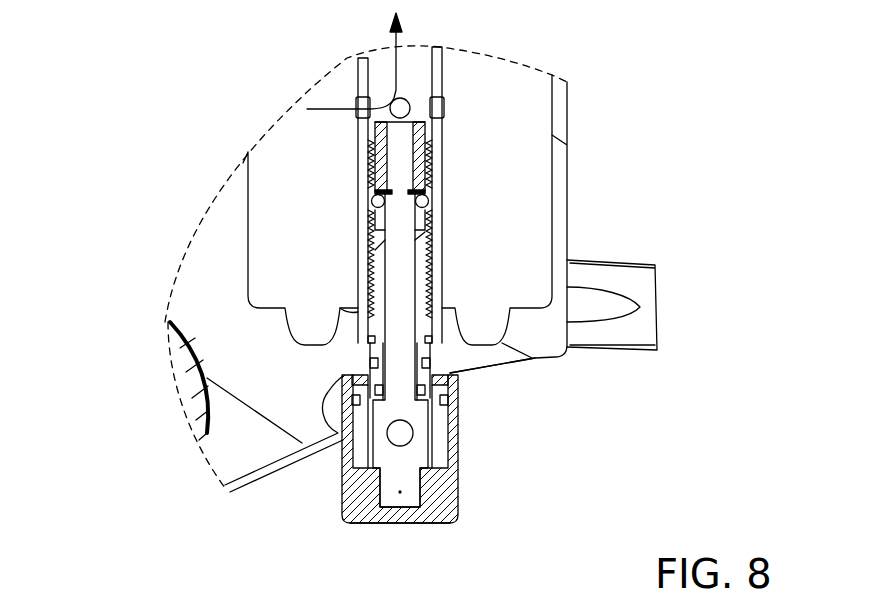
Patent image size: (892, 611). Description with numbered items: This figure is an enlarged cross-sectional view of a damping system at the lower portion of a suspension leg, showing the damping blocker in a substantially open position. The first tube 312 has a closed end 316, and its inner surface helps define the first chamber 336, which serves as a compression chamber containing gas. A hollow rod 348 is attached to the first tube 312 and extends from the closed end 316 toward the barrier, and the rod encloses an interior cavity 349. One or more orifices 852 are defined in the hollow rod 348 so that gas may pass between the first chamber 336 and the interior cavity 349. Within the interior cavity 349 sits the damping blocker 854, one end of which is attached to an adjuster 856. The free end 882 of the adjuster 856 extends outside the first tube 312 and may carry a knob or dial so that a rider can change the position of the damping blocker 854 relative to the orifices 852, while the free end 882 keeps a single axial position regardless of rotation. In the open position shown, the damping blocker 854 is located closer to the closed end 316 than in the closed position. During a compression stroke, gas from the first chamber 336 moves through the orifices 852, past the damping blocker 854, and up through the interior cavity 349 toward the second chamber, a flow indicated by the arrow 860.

The first tube 312 is at (567, 117).
The closed end 316 is at (545, 360).
The first chamber 336 is at (322, 269).
The hollow rod 348 is at (442, 62).
The interior cavity 349 is at (378, 59).
The orifice 852 is at (444, 110).
The damping blocker 854 is at (432, 165).
The adjuster 856 is at (438, 486).
The arrow 860 is at (398, 68).
The free end 882 is at (420, 523).